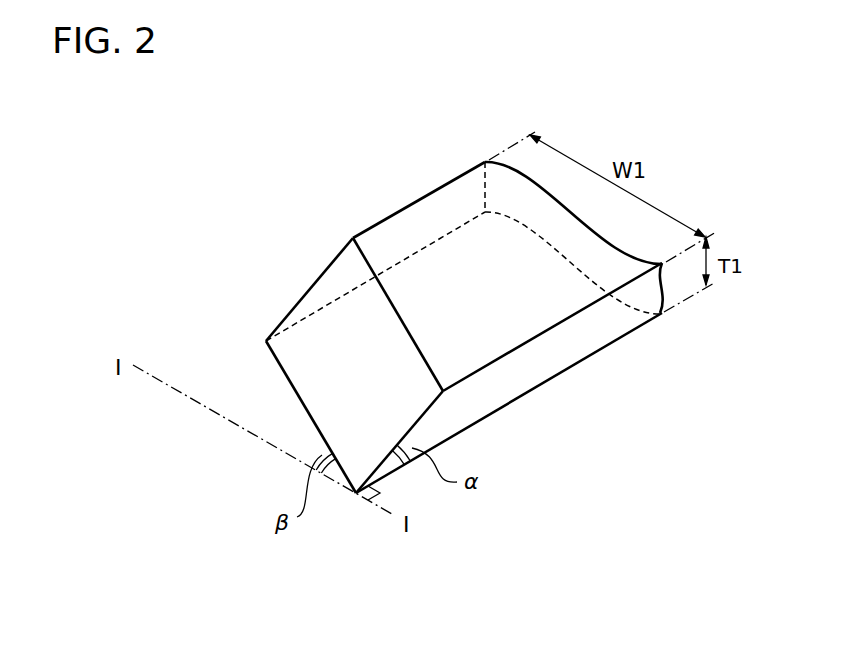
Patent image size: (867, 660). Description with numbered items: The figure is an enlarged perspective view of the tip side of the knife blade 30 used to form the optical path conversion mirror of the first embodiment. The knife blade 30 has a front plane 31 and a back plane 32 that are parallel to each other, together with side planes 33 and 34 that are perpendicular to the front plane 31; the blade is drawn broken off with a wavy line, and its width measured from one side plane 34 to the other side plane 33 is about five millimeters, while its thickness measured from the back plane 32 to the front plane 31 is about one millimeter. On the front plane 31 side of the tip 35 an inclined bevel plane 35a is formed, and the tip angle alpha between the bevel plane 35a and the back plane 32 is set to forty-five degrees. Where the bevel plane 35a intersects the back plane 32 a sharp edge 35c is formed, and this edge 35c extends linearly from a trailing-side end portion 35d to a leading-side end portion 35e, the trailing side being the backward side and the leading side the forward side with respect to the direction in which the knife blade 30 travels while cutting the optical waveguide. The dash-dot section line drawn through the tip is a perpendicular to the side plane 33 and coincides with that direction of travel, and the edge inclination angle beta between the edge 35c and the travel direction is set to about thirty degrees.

The knife blade 30 is at (159, 137).
The front plane 31 is at (550, 302).
The back plane 32 is at (522, 385).
The side plane 33 is at (478, 403).
The side plane 34 is at (420, 235).
The tip 35 is at (313, 200).
The bevel plane 35a is at (358, 320).
The edge 35c is at (278, 362).
The trailing-side end portion 35d is at (357, 495).
The leading-side end portion 35e is at (263, 341).